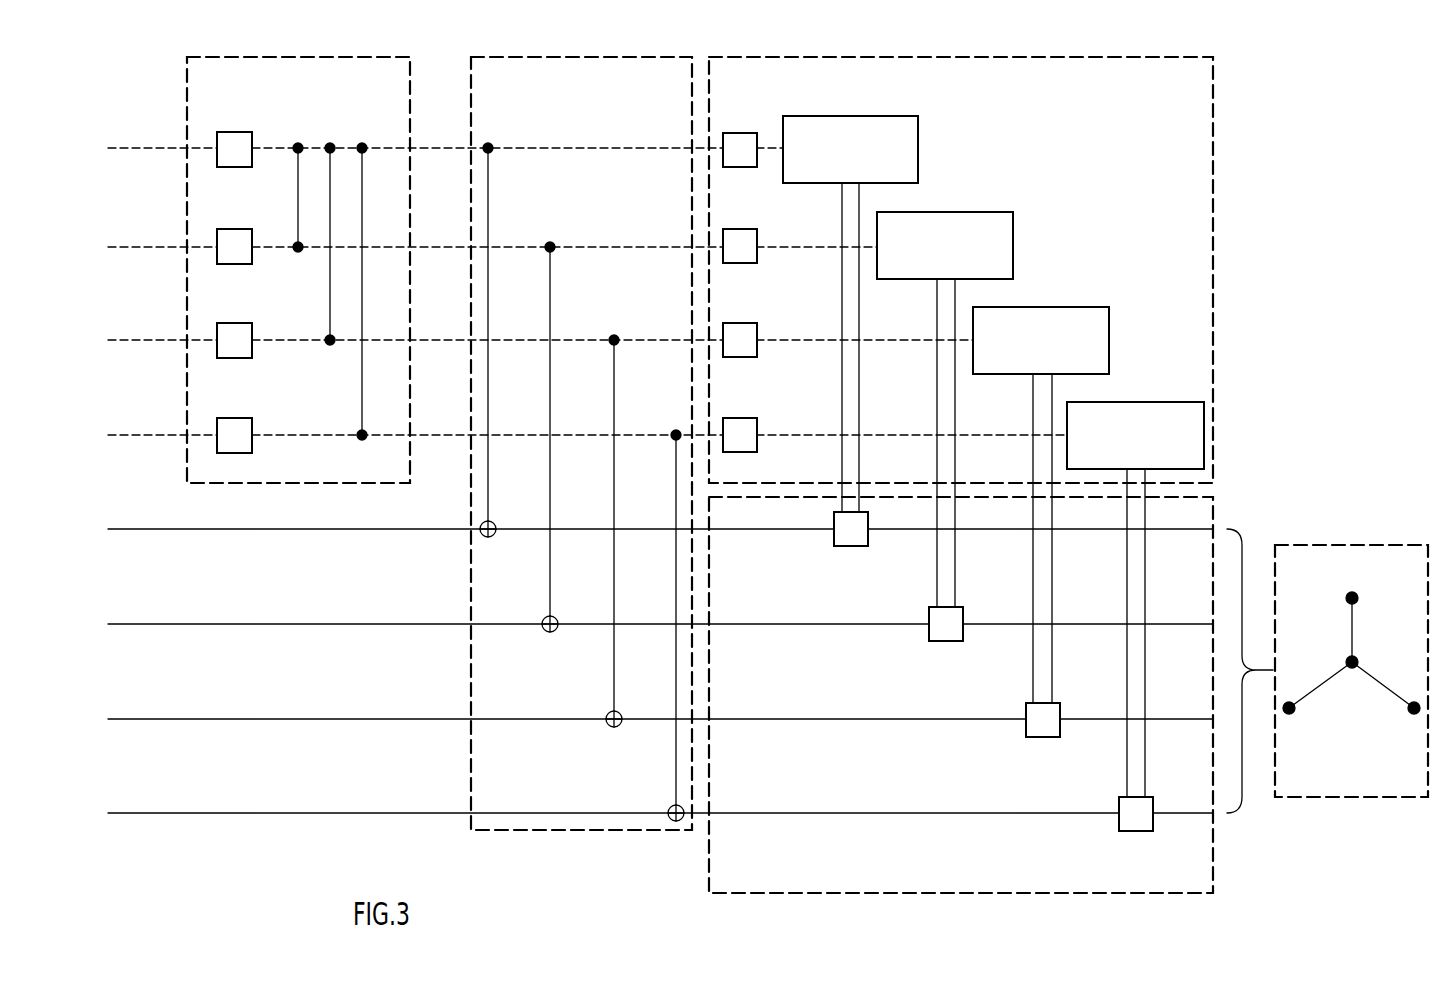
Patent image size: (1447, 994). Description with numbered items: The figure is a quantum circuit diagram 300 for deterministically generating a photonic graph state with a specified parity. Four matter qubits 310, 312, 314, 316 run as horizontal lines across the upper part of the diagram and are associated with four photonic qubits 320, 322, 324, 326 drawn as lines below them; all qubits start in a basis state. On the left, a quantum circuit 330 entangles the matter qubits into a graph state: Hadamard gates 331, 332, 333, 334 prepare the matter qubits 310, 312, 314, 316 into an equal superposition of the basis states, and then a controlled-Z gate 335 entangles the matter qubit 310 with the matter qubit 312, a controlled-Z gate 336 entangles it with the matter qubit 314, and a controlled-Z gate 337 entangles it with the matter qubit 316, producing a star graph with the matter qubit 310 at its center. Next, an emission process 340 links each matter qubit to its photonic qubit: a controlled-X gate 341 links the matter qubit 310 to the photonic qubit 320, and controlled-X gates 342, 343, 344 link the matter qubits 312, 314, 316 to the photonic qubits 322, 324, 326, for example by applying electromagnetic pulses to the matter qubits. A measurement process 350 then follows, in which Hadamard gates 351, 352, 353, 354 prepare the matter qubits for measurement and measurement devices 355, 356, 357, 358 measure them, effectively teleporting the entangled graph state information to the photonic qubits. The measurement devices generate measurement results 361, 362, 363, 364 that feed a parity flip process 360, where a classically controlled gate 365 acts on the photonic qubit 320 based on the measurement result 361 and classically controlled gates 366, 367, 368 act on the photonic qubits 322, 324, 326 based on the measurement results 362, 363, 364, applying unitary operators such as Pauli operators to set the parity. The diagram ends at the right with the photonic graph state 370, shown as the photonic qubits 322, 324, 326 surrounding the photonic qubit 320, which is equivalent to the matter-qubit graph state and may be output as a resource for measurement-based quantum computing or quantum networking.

The quantum circuit diagram 300 is at (84, 64).
The matter qubit 310 is at (133, 148).
The matter qubit 312 is at (133, 247).
The matter qubit 314 is at (133, 340).
The matter qubit 316 is at (133, 435).
The photonic qubit 320 is at (133, 529).
The photonic qubit 322 is at (133, 624).
The photonic qubit 324 is at (133, 719).
The photonic qubit 326 is at (133, 813).
The quantum circuit 330 is at (253, 57).
The Hadamard gate 331 is at (236, 132).
The Hadamard gate 332 is at (240, 229).
The Hadamard gate 333 is at (236, 323).
The Hadamard gate 334 is at (236, 418).
The controlled-Z gate 335 is at (297, 213).
The controlled-Z gate 336 is at (329, 300).
The controlled-Z gate 337 is at (361, 405).
The emission process 340 is at (536, 57).
The controlled-X gate 341 is at (489, 203).
The controlled-X gate 342 is at (551, 296).
The controlled-X gate 343 is at (615, 400).
The controlled-X gate 344 is at (676, 497).
The measurement process 350 is at (776, 57).
The Hadamard gate 351 is at (735, 133).
The Hadamard gate 352 is at (741, 229).
The Hadamard gate 353 is at (741, 323).
The Hadamard gate 354 is at (741, 418).
The measurement device 355 is at (803, 116).
The measurement device 356 is at (973, 212).
The measurement device 357 is at (1058, 307).
The measurement device 358 is at (1153, 402).
The parity flip process 360 is at (1140, 895).
The measurement result 361 is at (860, 461).
The measurement result 362 is at (956, 566).
The measurement result 363 is at (1053, 662).
The measurement result 364 is at (1146, 766).
The classically controlled gate 365 is at (852, 547).
The classically controlled gate 366 is at (947, 642).
The classically controlled gate 367 is at (1042, 738).
The classically controlled gate 368 is at (1137, 832).
The photonic graph state 370 is at (1337, 545).